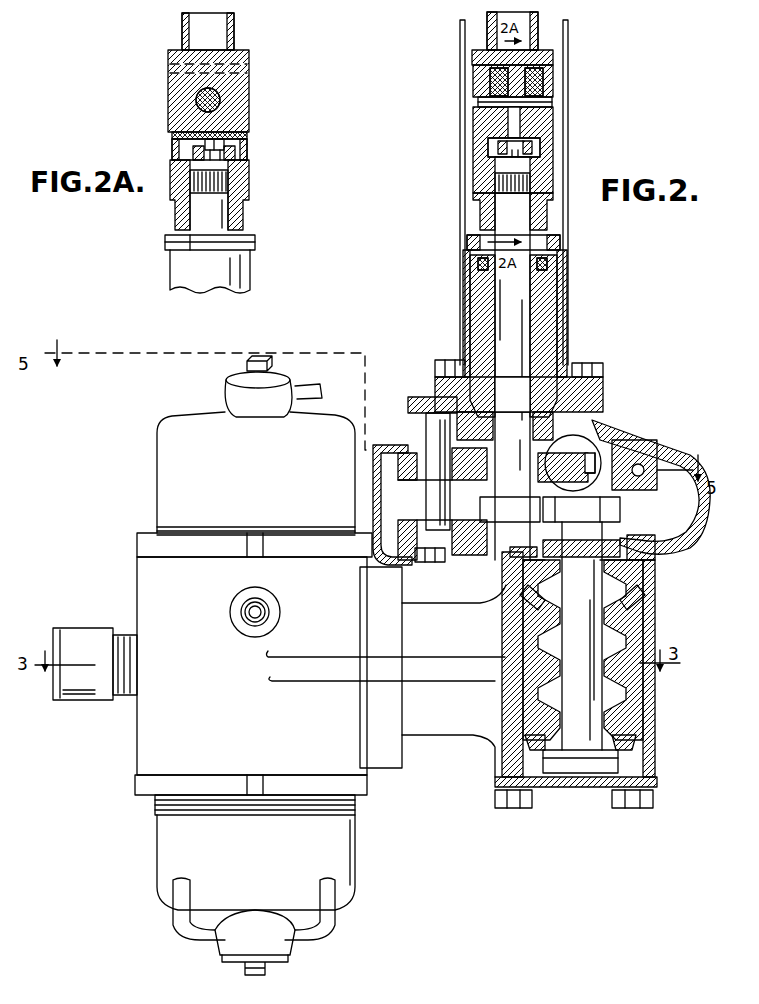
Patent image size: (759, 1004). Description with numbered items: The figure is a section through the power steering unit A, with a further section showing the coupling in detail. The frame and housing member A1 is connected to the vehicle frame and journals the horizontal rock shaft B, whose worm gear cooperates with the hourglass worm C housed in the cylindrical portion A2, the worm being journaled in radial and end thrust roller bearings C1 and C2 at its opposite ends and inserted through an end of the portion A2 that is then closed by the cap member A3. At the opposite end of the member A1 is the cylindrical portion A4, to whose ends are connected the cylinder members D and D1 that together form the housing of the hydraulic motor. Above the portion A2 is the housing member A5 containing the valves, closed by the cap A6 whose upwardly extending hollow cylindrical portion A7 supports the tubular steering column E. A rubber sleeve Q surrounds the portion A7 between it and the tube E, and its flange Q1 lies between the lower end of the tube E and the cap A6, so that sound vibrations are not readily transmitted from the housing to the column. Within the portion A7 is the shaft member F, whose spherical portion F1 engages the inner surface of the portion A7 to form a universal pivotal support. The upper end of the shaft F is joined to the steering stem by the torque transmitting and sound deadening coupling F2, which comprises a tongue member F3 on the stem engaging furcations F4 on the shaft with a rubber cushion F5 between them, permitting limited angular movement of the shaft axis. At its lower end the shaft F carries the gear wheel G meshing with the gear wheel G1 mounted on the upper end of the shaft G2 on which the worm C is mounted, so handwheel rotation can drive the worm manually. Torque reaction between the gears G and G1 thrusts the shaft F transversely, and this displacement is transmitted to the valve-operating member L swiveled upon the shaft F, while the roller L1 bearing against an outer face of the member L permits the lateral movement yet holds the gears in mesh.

In FIG. 2A, the tongue member F3 is at (182, 118).
In FIG. 2, the tongue member F3 is at (540, 92).
In FIG. 2A, the torque transmitting and sound deadening coupling F2 is at (250, 132).
In FIG. 2, the torque transmitting and sound deadening coupling F2 is at (545, 140).
In FIG. 2A, the furcations F4 is at (178, 151).
In FIG. 2, the furcations F4 is at (478, 143).
In FIG. 2A, the cushion F5 is at (246, 140).
In FIG. 2, the cushion F5 is at (490, 110).
In FIG. 2, the steering column E is at (566, 172).
In FIG. 2, the shaft member F is at (515, 358).
In FIG. 2, the spherical portion F1 is at (540, 292).
In FIG. 2, the hollow cylindrical portion A7 is at (557, 316).
In FIG. 2, the cap A6 is at (600, 392).
In FIG. 2, the flange Q1 is at (450, 372).
In FIG. 2, the sleeve Q is at (576, 367).
In FIG. 2, the unit A is at (430, 393).
In FIG. 2, the roller L1 is at (410, 452).
In FIG. 2, the valve-operating member L is at (588, 468).
In FIG. 2, the housing member A5 is at (662, 466).
In FIG. 2, the gear wheel G is at (510, 509).
In FIG. 2, the gear wheel G1 is at (581, 509).
In FIG. 2, the cylindrical portion A2 is at (660, 615).
In FIG. 2, the worm C is at (637, 668).
In FIG. 2, the shaft G2 is at (582, 718).
In FIG. 2, the radial and end thrust roller bearing C1 is at (655, 596).
In FIG. 2, the radial and end thrust roller bearing C2 is at (640, 746).
In FIG. 2, the cap member A3 is at (578, 790).
In FIG. 2, the frame and housing member A1 is at (425, 738).
In FIG. 2, the cylinder member D is at (172, 478).
In FIG. 2, the cylindrical portion A4 is at (152, 737).
In FIG. 2, the rock shaft B is at (92, 690).
In FIG. 2, the cylinder member D1 is at (172, 852).